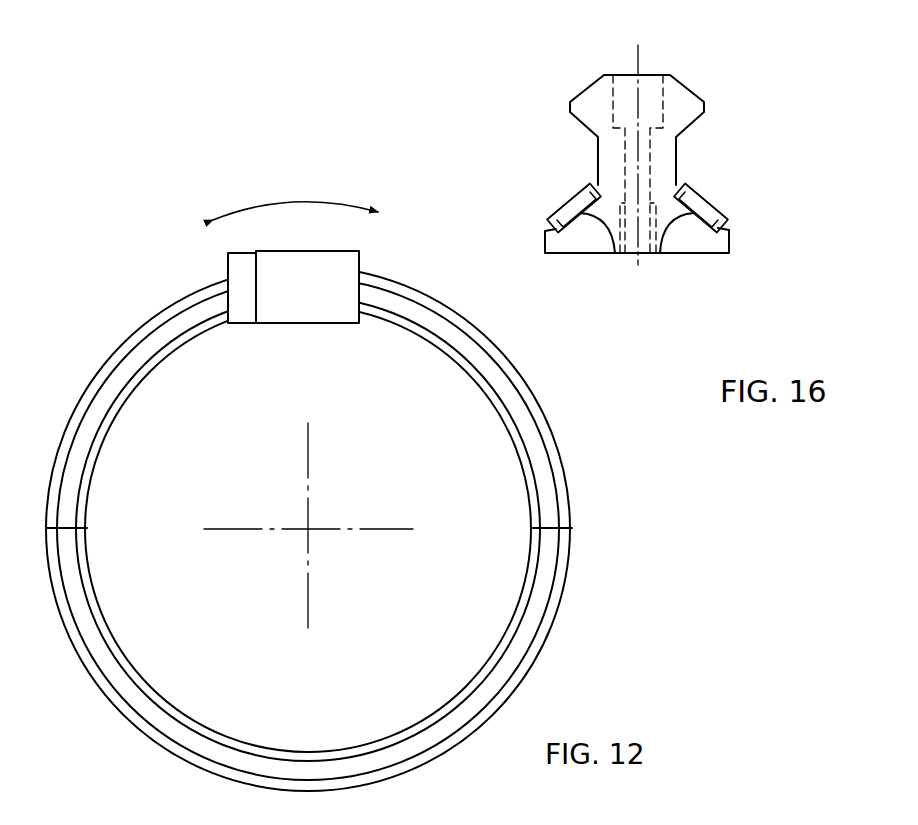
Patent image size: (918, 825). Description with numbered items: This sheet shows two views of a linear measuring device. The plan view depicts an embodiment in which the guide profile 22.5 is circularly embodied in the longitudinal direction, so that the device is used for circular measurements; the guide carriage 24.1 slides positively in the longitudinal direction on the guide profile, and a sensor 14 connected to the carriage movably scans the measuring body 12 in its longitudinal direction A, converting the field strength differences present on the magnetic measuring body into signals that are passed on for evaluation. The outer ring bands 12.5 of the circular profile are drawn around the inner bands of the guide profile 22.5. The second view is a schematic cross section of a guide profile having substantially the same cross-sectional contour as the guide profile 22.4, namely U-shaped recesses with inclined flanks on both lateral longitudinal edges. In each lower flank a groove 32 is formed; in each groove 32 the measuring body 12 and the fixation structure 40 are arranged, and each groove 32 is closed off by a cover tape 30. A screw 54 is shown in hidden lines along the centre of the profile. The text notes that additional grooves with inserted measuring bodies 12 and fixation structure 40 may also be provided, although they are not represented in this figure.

In FIG. 12, the outer ring band 12.5 is at (118, 353).
In FIG. 12, the guide profile 22.5 is at (74, 492).
In FIG. 12, the sensor 14 is at (232, 266).
In FIG. 12, the guide carriage 24.1 is at (313, 309).
In FIG. 12, the longitudinal direction A is at (295, 203).
In FIG. 16, the screw 54 is at (651, 156).
In FIG. 16, the cover tape 30 is at (582, 186).
In FIG. 16, the measuring body 12 is at (566, 208).
In FIG. 16, the fixation structure 40 is at (575, 222).
In FIG. 16, the groove 32 is at (665, 222).
In FIG. 16, the guide profile 22.4 is at (676, 244).